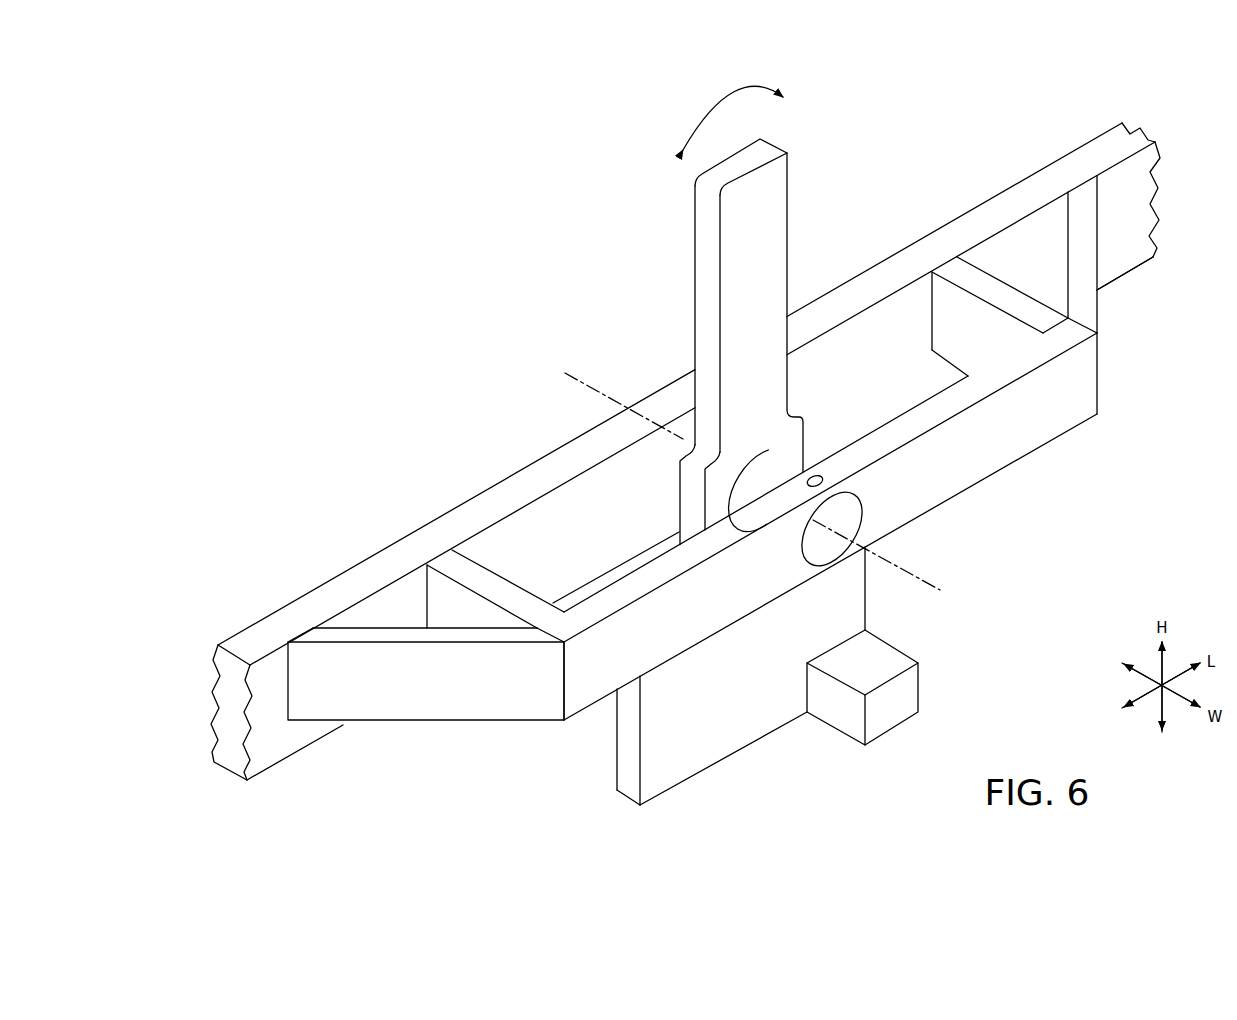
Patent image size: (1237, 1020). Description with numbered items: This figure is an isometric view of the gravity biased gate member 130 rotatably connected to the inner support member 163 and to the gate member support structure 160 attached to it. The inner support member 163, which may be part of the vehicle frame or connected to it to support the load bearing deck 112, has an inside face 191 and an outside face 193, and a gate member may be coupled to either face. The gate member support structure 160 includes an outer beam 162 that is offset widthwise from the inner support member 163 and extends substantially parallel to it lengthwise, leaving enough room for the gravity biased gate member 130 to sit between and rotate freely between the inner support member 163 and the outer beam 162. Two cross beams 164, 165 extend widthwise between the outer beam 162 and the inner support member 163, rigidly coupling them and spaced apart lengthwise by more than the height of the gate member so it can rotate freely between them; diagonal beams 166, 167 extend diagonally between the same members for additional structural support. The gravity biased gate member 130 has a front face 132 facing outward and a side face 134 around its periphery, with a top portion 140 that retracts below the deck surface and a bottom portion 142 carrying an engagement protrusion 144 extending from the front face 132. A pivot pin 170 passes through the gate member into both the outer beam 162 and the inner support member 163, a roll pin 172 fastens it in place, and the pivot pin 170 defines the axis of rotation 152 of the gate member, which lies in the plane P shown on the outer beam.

The load bearing deck 112 is at (260, 541).
The gravity biased gate member 130 is at (830, 190).
The front face 132 is at (753, 186).
The side face 134 is at (620, 772).
The top portion 140 is at (730, 230).
The bottom portion 142 is at (716, 768).
The engagement protrusion 144 is at (922, 696).
The axis of rotation 152 is at (882, 561).
The gate member support structure 160 is at (584, 722).
The outer beam 162 is at (980, 468).
The inner support member 163 is at (921, 216).
The cross beam 164 is at (488, 579).
The cross beam 165 is at (1000, 291).
The diagonal beam 166 is at (437, 713).
The diagonal beam 167 is at (1099, 298).
The pivot pin 170 is at (857, 508).
The roll pin 172 is at (815, 475).
The inside face 191 is at (1085, 142).
The outside face 193 is at (1130, 230).
The plane P is at (775, 606).